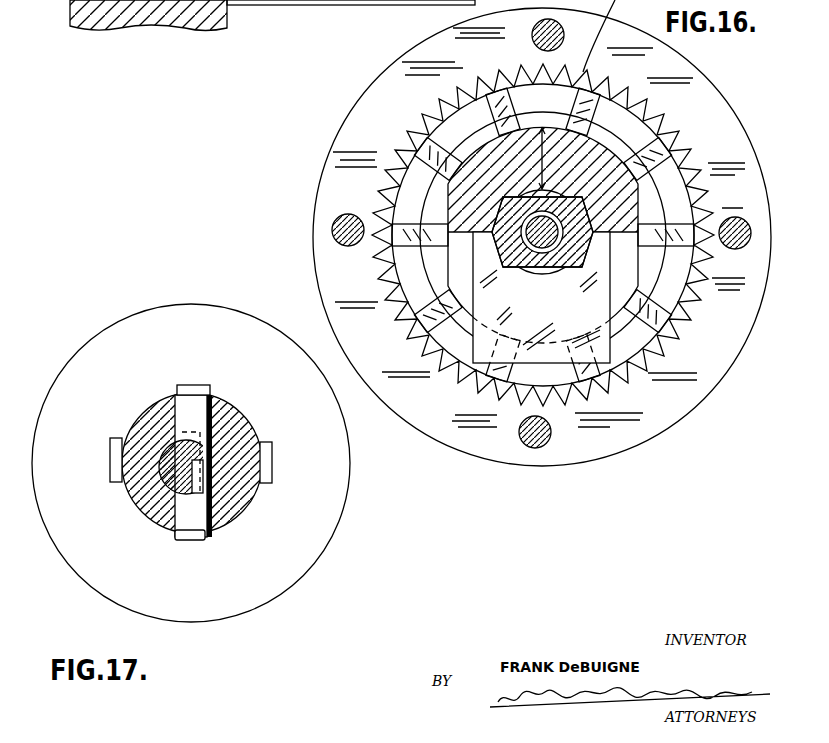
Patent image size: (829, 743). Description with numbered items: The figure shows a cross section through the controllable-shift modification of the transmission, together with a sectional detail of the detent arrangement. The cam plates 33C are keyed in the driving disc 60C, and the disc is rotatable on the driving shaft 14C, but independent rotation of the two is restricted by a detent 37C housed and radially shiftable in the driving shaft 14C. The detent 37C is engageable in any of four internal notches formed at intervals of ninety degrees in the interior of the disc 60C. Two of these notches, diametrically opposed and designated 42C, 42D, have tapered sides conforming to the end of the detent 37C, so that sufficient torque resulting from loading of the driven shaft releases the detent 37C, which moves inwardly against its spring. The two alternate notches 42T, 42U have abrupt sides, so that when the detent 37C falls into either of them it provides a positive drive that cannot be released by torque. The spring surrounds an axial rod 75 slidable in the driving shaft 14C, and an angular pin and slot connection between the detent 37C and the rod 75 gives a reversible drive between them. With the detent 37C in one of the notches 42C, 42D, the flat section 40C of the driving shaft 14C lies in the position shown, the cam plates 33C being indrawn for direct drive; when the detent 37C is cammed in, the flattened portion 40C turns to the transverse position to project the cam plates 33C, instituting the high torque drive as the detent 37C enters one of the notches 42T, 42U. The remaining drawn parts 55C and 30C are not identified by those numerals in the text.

In FIG. 16, the outer casing ring 55C is at (625, 372).
In FIG. 16, the cam plate 33C is at (467, 252).
In FIG. 16, the gear body with radial tabs 30C is at (432, 292).
In FIG. 16, the axial rod 75 is at (535, 260).
In FIG. 16, the flat section of the driving shaft 40C is at (547, 268).
In FIG. 17, the driving disc 60C is at (201, 308).
In FIG. 17, the driving shaft 14C is at (243, 410).
In FIG. 17, the detent 37C is at (205, 522).
In FIG. 17, the tapered notch 42C is at (195, 385).
In FIG. 17, the tapered notch 42D is at (178, 541).
In FIG. 17, the abrupt-sided notch 42T is at (110, 468).
In FIG. 17, the abrupt-sided notch 42U is at (272, 465).